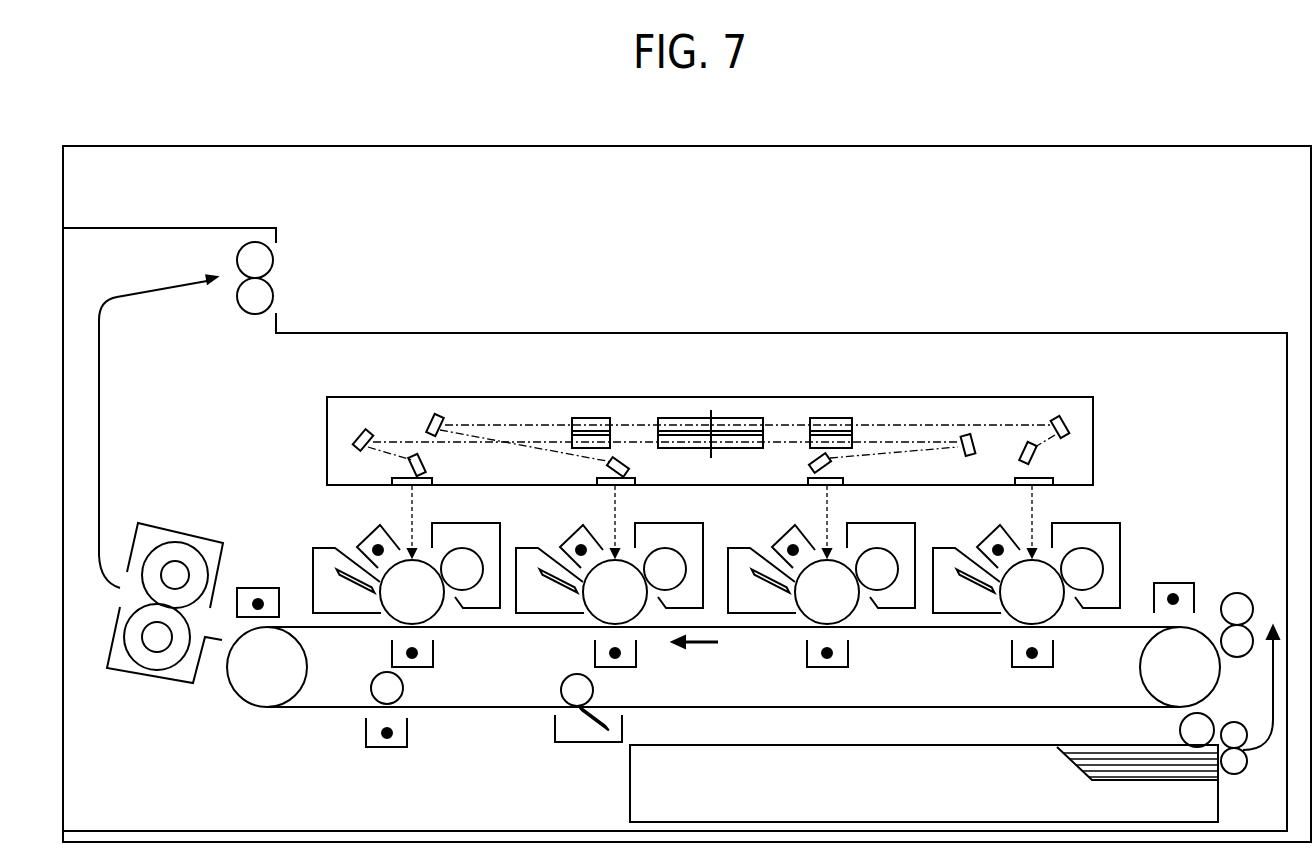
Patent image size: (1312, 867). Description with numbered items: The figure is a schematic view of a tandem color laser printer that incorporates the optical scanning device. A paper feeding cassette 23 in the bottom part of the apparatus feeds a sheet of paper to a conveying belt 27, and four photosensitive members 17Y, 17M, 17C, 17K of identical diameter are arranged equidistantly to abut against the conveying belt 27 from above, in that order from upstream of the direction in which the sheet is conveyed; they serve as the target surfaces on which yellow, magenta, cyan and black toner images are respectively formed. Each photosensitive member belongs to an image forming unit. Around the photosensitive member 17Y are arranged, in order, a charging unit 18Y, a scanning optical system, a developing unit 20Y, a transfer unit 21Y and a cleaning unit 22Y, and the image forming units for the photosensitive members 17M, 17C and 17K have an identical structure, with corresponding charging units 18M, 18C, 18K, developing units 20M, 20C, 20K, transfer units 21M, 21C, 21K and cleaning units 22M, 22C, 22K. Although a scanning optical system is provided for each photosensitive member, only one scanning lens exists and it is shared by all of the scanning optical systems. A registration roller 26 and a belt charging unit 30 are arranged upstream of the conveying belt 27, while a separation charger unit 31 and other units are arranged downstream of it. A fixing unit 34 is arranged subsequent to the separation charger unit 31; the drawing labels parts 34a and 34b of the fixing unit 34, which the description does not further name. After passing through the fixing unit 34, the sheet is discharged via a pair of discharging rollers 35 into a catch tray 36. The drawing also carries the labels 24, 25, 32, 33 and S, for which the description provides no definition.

The photosensitive member 17K is at (396, 606).
The photosensitive member 17C is at (615, 555).
The photosensitive member 17M is at (827, 555).
The photosensitive member 17Y is at (1032, 555).
The charging unit 18K is at (366, 536).
The charging unit 18C is at (568, 534).
The charging unit 18M is at (780, 534).
The charging unit 18Y is at (985, 534).
The developing unit 20K is at (458, 516).
The developing unit 20C is at (676, 554).
The developing unit 20M is at (888, 554).
The developing unit 20Y is at (1094, 554).
The transfer unit 21K is at (433, 652).
The transfer unit 21C is at (641, 661).
The transfer unit 21M is at (853, 661).
The transfer unit 21Y is at (1058, 661).
The cleaning unit 22K is at (328, 614).
The cleaning unit 22C is at (550, 608).
The cleaning unit 22M is at (762, 608).
The cleaning unit 22Y is at (967, 608).
The paper feeding cassette 23 is at (628, 773).
The pickup roller 24 is at (1180, 730).
The feed rollers 25 is at (1238, 722).
The registration roller 26 is at (1238, 596).
The conveying belt 27 is at (845, 708).
The belt charging unit 30 is at (1172, 583).
The separation charger unit 31 is at (255, 588).
The sensor 32 is at (407, 732).
The belt cleaning device 33 is at (553, 736).
The fixing unit 34 is at (165, 612).
The heating roller 34a is at (176, 546).
The pressure roller 34b is at (150, 668).
The discharging rollers 35 is at (307, 266).
The catch tray 36 is at (733, 333).
The sheet S is at (1090, 750).